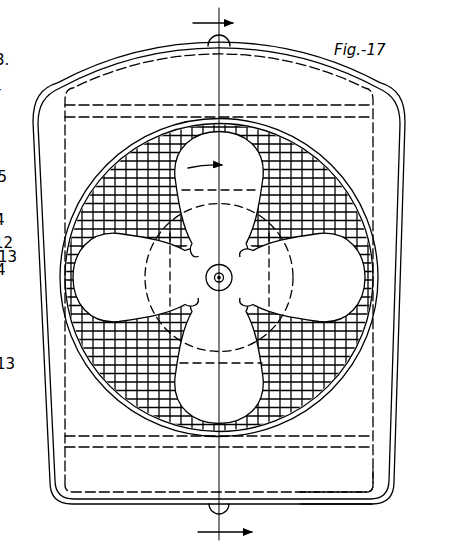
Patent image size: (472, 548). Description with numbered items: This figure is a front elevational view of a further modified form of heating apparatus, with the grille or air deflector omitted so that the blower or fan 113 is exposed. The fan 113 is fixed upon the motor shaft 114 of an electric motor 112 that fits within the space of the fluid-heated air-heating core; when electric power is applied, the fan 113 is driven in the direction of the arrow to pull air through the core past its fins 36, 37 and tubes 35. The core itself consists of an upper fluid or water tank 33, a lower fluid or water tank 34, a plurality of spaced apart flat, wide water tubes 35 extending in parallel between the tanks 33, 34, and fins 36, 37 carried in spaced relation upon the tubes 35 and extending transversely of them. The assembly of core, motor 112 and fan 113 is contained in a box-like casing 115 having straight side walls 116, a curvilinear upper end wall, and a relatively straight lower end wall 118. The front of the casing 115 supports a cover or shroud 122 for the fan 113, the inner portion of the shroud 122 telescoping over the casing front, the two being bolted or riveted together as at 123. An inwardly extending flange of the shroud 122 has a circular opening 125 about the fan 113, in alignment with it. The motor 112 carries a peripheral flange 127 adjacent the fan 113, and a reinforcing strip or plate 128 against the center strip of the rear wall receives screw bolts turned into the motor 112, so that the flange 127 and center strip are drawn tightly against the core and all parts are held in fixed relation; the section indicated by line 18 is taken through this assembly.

The section line 18 is at (237, 277).
The upper fluid or water tank 33 is at (356, 90).
The lower fluid or water tank 34 is at (321, 486).
The fluid or water tubes 35 is at (342, 226).
The fins 36 is at (341, 381).
The fins 37 is at (349, 335).
The electric motor 112 is at (269, 197).
The blower or fan 113 is at (339, 284).
The motor shaft 114 is at (219, 291).
The casing 115 is at (80, 75).
The side walls 116 is at (400, 172).
The lower end wall 118 is at (333, 504).
The cover or shroud 122 is at (389, 133).
The bolts or rivets 123 is at (207, 42).
The circular opening 125 is at (95, 379).
The peripheral flange 127 is at (14, 332).
The reinforcing strip or plate 128 is at (110, 392).